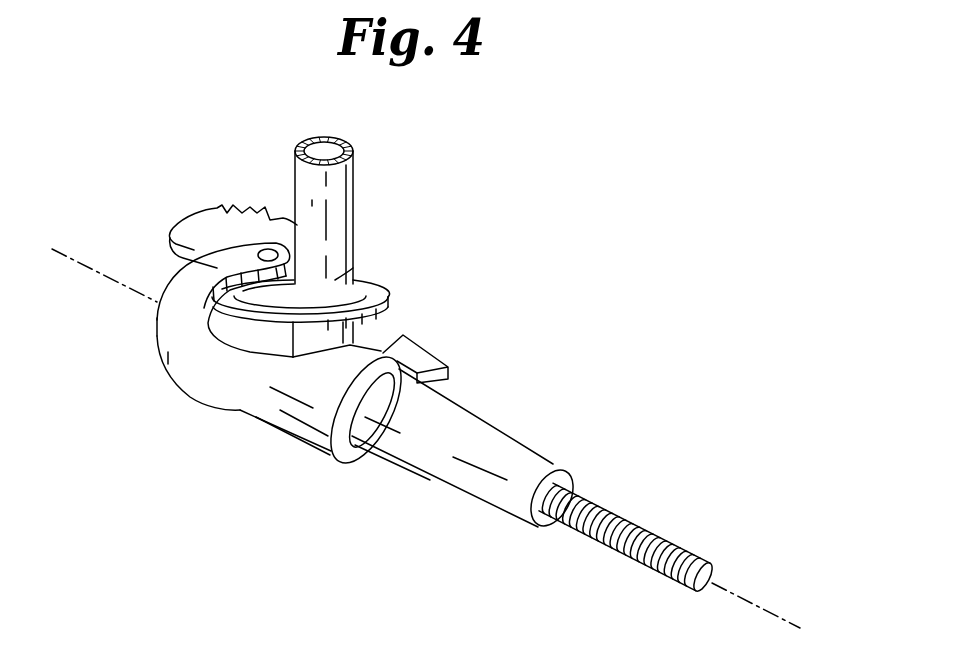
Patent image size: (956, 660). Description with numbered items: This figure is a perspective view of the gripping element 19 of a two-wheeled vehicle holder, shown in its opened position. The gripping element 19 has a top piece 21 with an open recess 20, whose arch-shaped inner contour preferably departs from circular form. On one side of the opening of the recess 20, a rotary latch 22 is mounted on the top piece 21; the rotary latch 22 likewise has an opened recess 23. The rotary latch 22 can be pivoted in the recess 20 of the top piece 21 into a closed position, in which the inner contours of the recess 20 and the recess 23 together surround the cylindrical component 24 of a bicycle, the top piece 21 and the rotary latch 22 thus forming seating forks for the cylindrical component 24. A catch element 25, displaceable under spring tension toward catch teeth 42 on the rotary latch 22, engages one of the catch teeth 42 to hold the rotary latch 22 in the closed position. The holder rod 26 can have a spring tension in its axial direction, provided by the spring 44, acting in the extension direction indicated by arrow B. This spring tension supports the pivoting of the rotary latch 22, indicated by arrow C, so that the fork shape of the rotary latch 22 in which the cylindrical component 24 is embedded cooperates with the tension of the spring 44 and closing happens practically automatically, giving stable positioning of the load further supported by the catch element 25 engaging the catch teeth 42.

The gripping element 19 is at (147, 423).
The recess 20 is at (237, 332).
The top piece 21 is at (180, 300).
The rotary latch 22 is at (388, 298).
The recess 23 is at (355, 268).
The cylindrical component 24 is at (353, 200).
The catch element 25 is at (455, 372).
The holder rod 26 is at (546, 462).
The catch teeth 42 is at (248, 203).
The spring 44 is at (667, 540).